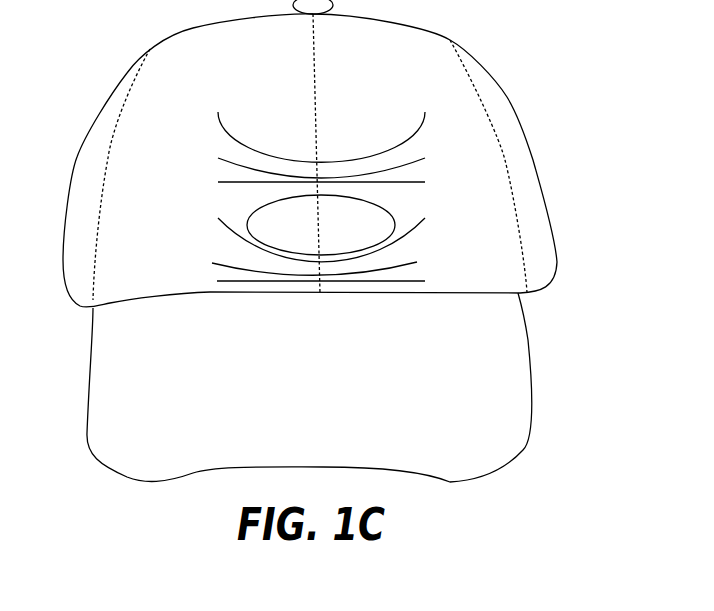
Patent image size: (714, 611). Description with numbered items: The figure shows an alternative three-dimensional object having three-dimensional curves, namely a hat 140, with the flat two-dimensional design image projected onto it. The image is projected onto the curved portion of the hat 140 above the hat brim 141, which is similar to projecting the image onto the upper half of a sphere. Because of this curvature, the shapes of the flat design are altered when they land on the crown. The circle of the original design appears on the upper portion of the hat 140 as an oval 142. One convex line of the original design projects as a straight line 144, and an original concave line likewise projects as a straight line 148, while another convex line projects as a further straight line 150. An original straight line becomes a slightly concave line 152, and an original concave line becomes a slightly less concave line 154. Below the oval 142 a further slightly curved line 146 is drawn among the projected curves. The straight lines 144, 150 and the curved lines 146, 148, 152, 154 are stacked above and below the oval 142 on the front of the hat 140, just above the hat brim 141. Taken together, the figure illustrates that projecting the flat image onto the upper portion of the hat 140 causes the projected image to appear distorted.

The hat 140 is at (127, 71).
The hat brim 141 is at (91, 358).
The oval 142 is at (250, 217).
The straight line 144 is at (217, 279).
The lower shallow arc 146 is at (213, 262).
The straight line 148 is at (216, 225).
The straight line 150 is at (218, 182).
The slightly concave line 152 is at (218, 160).
The slightly less concave line 154 is at (219, 113).